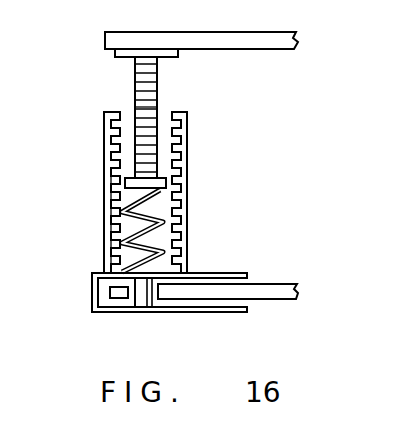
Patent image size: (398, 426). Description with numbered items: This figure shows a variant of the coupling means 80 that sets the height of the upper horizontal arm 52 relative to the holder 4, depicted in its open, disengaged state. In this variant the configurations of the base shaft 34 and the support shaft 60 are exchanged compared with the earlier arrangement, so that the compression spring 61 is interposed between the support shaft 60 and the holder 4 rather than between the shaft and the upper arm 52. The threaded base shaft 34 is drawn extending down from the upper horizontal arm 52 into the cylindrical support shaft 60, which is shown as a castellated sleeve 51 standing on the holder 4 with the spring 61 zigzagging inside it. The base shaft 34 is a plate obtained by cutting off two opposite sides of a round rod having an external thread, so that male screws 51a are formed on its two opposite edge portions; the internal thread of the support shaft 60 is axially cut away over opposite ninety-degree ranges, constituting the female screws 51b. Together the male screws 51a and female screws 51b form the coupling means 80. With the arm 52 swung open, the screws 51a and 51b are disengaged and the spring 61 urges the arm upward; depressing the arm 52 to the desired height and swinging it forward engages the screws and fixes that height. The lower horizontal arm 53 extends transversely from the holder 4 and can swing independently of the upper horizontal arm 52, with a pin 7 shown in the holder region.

The upper horizontal arm 52 is at (289, 44).
The base shaft 34 is at (160, 85).
The male screws 51a is at (140, 94).
The housing 51 is at (176, 150).
The female screws 51b is at (110, 178).
The coupling means 80 is at (80, 141).
The support shaft 60 is at (188, 189).
The compression spring 61 is at (166, 252).
The holder 4 is at (93, 297).
The pin 7 is at (148, 304).
The lower horizontal arm 53 is at (272, 294).